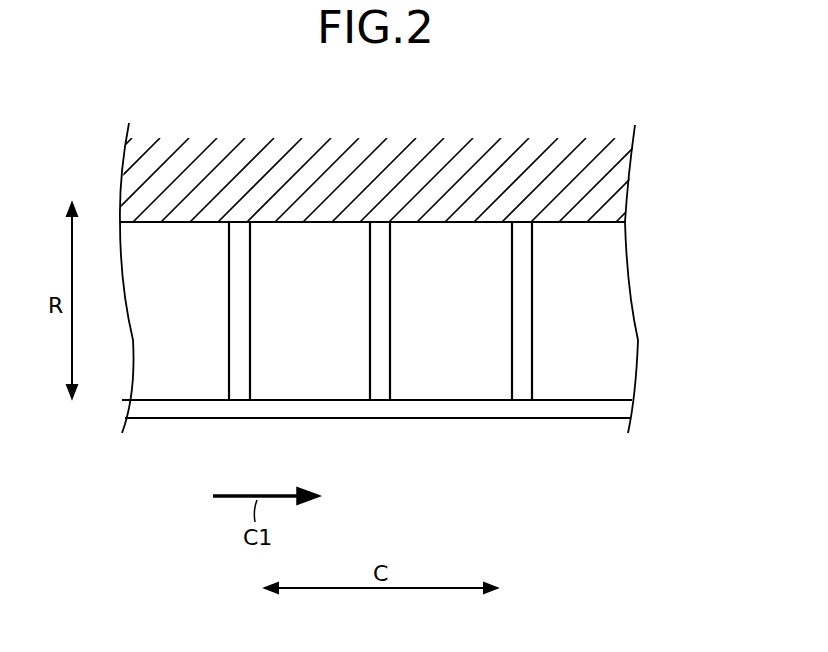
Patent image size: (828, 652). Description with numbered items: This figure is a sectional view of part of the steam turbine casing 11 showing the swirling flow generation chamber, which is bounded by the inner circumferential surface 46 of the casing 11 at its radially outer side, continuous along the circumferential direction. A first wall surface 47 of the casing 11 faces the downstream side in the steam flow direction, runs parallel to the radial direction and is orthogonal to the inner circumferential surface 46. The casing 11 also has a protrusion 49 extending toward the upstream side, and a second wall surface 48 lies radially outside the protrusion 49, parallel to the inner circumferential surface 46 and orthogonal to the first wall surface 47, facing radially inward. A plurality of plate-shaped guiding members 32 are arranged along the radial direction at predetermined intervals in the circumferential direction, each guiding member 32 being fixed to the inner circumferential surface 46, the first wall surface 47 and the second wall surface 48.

The casing 11 is at (394, 120).
The guiding member 32 is at (229, 365).
The inner circumferential surface 46 is at (466, 227).
The first wall surface 47 is at (601, 312).
The second wall surface 48 is at (310, 392).
The protrusion 49 is at (473, 408).